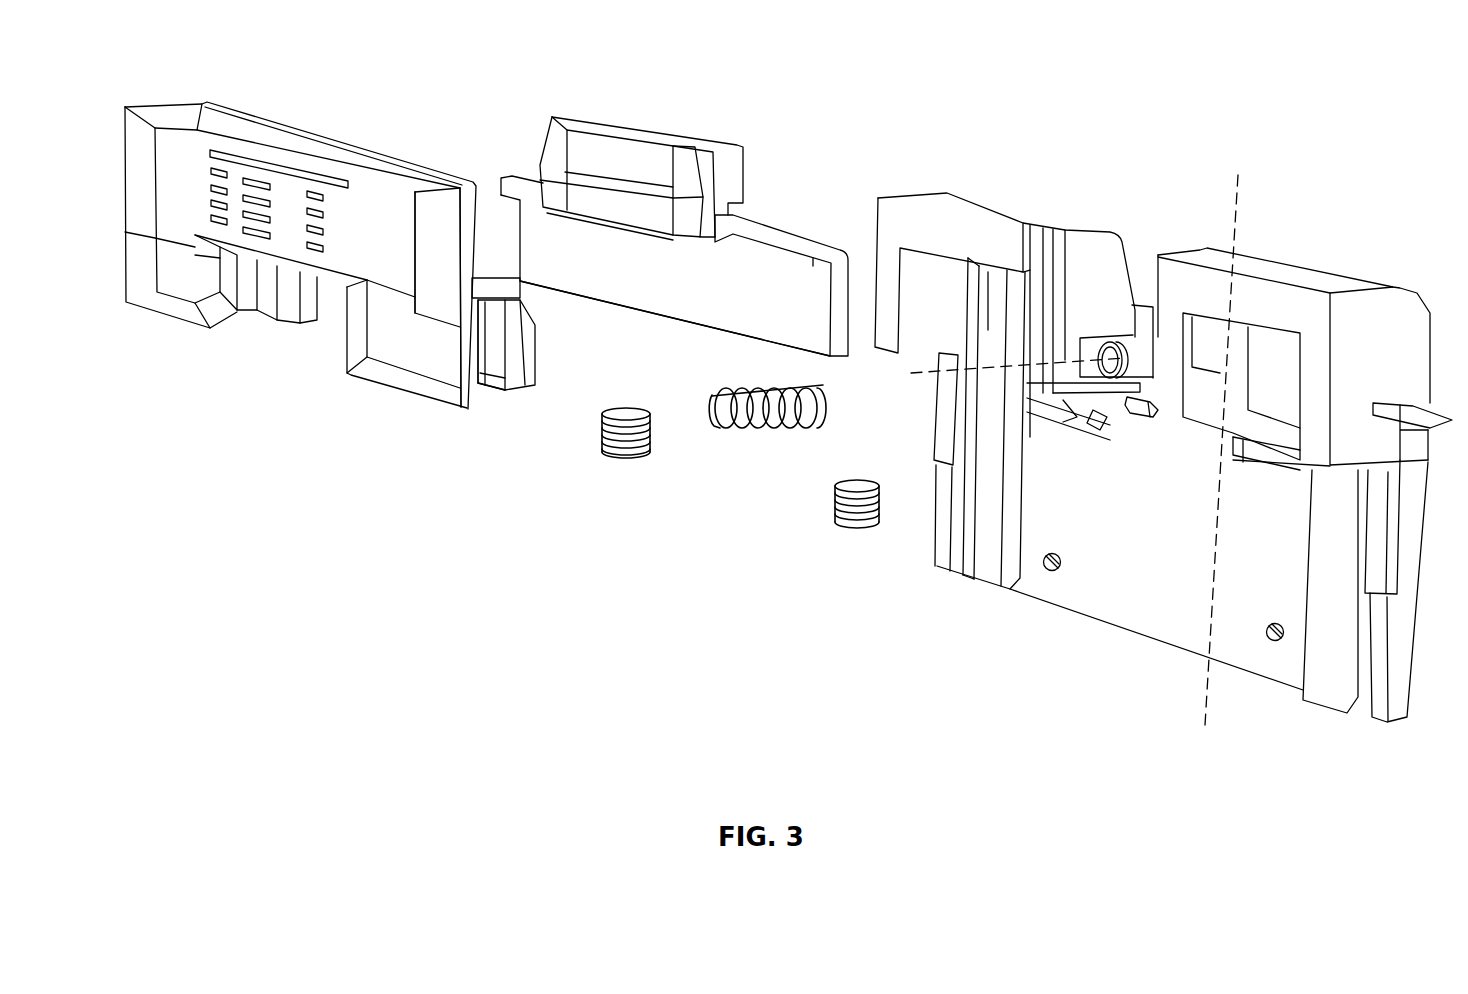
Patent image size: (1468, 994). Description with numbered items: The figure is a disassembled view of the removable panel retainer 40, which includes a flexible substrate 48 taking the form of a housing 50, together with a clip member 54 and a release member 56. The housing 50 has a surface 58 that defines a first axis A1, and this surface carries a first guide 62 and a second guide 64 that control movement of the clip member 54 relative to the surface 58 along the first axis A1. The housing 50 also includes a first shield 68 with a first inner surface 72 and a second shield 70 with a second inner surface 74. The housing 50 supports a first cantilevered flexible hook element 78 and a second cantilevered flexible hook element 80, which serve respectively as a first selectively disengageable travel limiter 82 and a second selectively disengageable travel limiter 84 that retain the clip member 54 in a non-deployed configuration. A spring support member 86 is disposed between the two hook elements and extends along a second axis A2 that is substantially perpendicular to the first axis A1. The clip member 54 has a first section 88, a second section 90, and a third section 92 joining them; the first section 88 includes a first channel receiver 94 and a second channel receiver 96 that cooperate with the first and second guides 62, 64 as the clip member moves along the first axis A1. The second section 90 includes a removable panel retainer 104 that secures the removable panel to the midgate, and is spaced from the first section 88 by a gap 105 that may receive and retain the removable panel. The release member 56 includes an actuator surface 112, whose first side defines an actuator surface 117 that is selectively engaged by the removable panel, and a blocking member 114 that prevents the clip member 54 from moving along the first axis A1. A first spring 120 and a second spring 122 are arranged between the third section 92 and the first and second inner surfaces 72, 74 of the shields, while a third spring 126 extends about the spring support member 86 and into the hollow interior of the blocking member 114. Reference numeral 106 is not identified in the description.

The removable panel retainer 40 is at (1033, 703).
The flexible substrate 48 is at (900, 233).
The housing 50 is at (1262, 236).
The clip member 54 is at (148, 58).
The release member 56 is at (541, 93).
The surface 58 is at (1150, 557).
The first guide 62 is at (984, 548).
The second guide 64 is at (1330, 577).
The first shield 68 is at (1098, 250).
The second shield 70 is at (1218, 290).
The first inner surface 72 is at (986, 270).
The second inner surface 74 is at (1281, 333).
The first cantilevered flexible hook element 78 is at (1097, 420).
The second cantilevered flexible hook element 80 is at (1276, 415).
The first selectively disengageable travel limiter 82 is at (1098, 437).
The second selectively disengageable travel limiter 84 is at (1258, 452).
The spring support member 86 is at (1129, 340).
The first section 88 is at (521, 286).
The second section 90 is at (405, 208).
The third section 92 is at (490, 268).
The first channel receiver 94 is at (276, 316).
The second channel receiver 96 is at (492, 383).
The removable panel retainer 104 is at (388, 366).
The gap 105 is at (478, 389).
The slot 106 is at (492, 310).
The actuator surface 112 is at (746, 300).
The blocking member 114 is at (638, 148).
The actuator surface 117 is at (762, 314).
The first spring 120 is at (630, 412).
The second spring 122 is at (857, 528).
The third spring 126 is at (728, 430).
The first axis A1 is at (1213, 689).
The second axis A2 is at (932, 374).